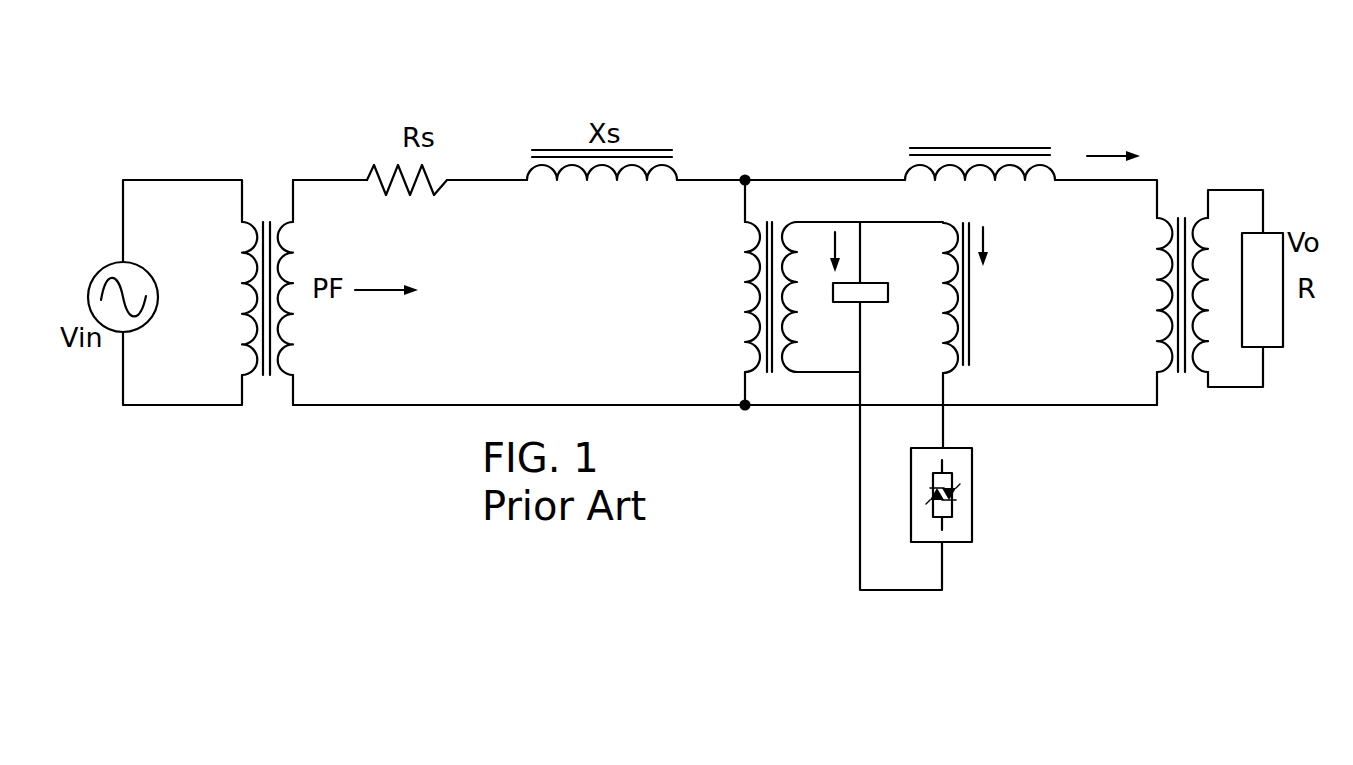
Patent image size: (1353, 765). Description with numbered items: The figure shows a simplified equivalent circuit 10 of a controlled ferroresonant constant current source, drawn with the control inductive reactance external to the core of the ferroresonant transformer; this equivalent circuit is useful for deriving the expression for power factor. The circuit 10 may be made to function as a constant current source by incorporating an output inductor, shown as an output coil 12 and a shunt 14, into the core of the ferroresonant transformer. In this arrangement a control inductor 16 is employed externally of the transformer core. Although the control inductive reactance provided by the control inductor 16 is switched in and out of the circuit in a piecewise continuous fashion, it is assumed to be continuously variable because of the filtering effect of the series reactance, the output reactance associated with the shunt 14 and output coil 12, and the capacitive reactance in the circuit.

The simplified equivalent circuit 10 is at (905, 100).
The output coil 12 is at (1182, 208).
The shunt 14 is at (1022, 132).
The control inductor 16 is at (977, 351).